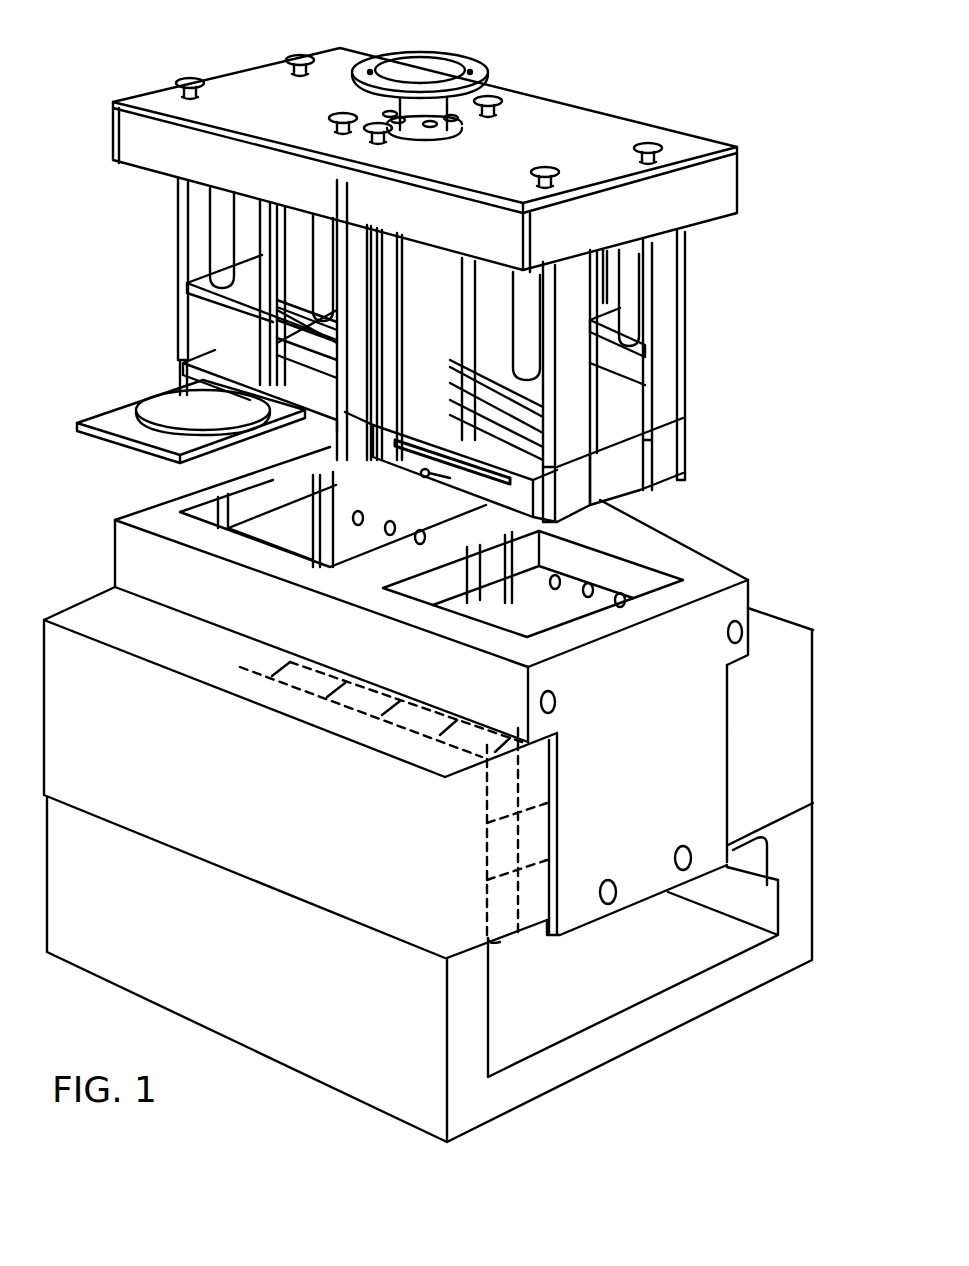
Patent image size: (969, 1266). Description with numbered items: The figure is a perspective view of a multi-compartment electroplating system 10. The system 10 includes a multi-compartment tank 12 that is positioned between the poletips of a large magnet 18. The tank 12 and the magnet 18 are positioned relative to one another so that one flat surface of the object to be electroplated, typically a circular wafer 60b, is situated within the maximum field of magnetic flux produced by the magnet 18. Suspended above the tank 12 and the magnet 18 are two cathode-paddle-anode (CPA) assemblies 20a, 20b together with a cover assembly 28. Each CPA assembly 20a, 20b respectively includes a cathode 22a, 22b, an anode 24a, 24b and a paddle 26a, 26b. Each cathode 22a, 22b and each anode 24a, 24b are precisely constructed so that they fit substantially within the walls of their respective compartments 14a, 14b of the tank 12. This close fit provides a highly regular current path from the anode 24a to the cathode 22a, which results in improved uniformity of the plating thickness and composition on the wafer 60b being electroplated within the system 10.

The multi-compartment electroplating system 10 is at (622, 34).
The multi-compartment tank 12 is at (665, 560).
The compartment 14a is at (564, 619).
The compartment 14b is at (366, 562).
The large magnet 18 is at (790, 698).
The cathode-paddle-anode (CPA) assembly 20a is at (768, 205).
The cathode-paddle-anode (CPA) assembly 20b is at (102, 160).
The cathode 22a is at (392, 440).
The cathode 22b is at (318, 432).
The anode 24a is at (447, 335).
The anode 24b is at (297, 275).
The paddle 26a is at (600, 385).
The paddle 26b is at (270, 332).
The cover assembly 28 is at (592, 122).
The circular wafer 60b is at (176, 400).